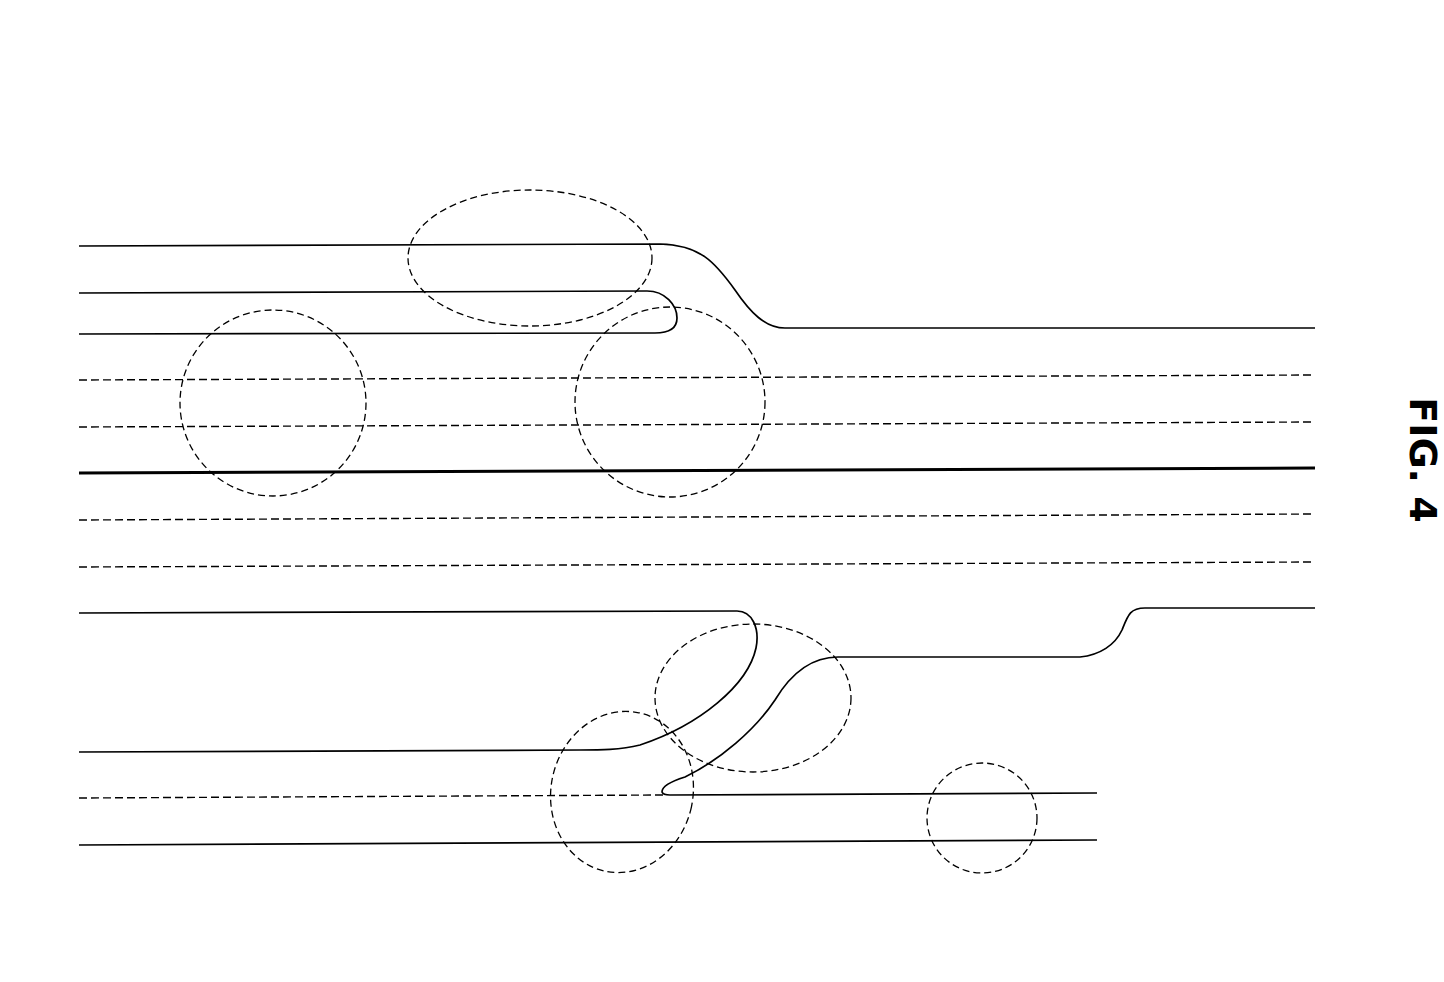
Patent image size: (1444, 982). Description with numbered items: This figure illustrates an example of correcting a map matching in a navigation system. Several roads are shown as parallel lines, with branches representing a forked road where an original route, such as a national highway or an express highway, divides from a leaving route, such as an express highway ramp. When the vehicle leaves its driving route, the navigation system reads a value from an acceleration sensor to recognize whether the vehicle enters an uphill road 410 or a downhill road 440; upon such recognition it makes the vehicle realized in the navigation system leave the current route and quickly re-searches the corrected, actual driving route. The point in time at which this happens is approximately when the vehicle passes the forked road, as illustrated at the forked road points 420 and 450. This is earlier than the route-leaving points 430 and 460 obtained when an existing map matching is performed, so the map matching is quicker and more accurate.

The uphill road 410 is at (853, 695).
The forked road point 420 is at (580, 715).
The existing map matching route-leaving point 430 is at (1038, 815).
The downhill road 440 is at (528, 190).
The forked road point 450 is at (728, 328).
The existing map matching route-leaving point 460 is at (273, 309).